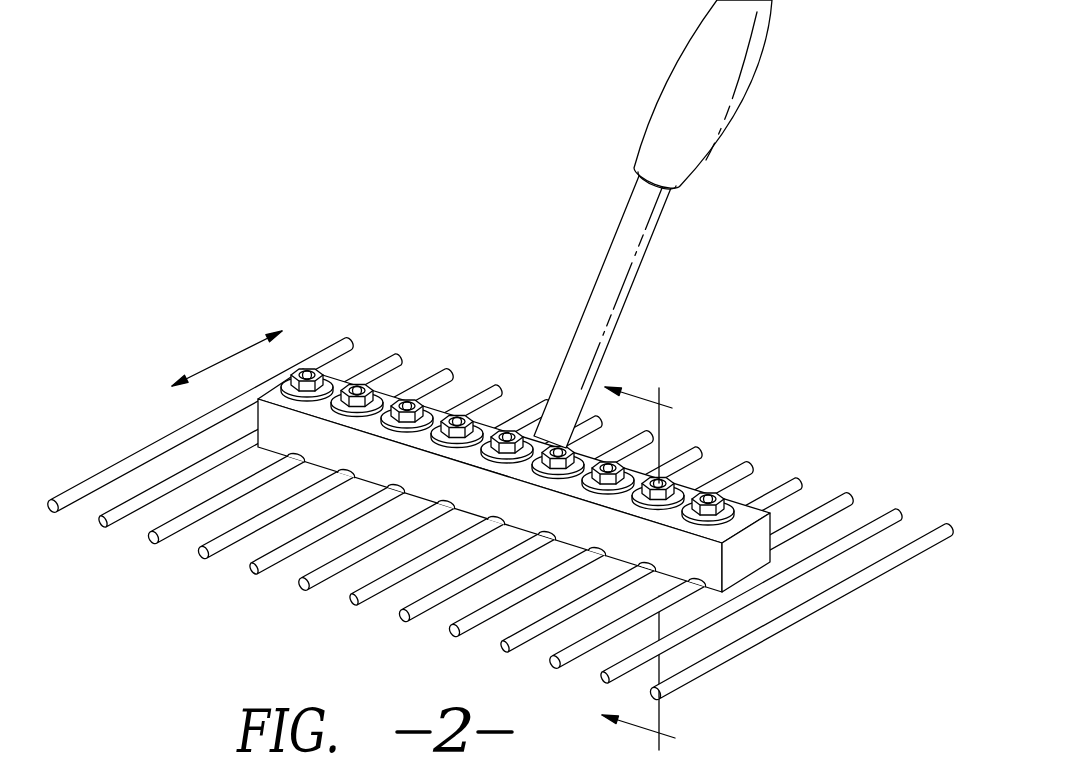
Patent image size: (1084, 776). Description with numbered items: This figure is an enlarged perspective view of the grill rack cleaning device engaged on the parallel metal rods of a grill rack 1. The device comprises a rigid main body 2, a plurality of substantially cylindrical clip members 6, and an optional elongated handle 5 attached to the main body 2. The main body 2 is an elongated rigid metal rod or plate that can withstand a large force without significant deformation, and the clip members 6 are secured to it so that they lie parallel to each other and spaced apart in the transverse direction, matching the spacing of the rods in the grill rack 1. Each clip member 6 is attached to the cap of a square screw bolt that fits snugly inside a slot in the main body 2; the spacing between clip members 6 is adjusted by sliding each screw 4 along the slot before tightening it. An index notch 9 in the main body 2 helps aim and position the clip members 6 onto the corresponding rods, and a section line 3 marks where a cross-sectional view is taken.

The grill rack 1 is at (843, 494).
The rigid main body 2 is at (752, 508).
The section line 3 is at (638, 558).
The screw 4 is at (507, 407).
The elongated handle 5 is at (677, 97).
The cylindrical clip members 6 is at (277, 457).
The index notch 9 is at (456, 418).